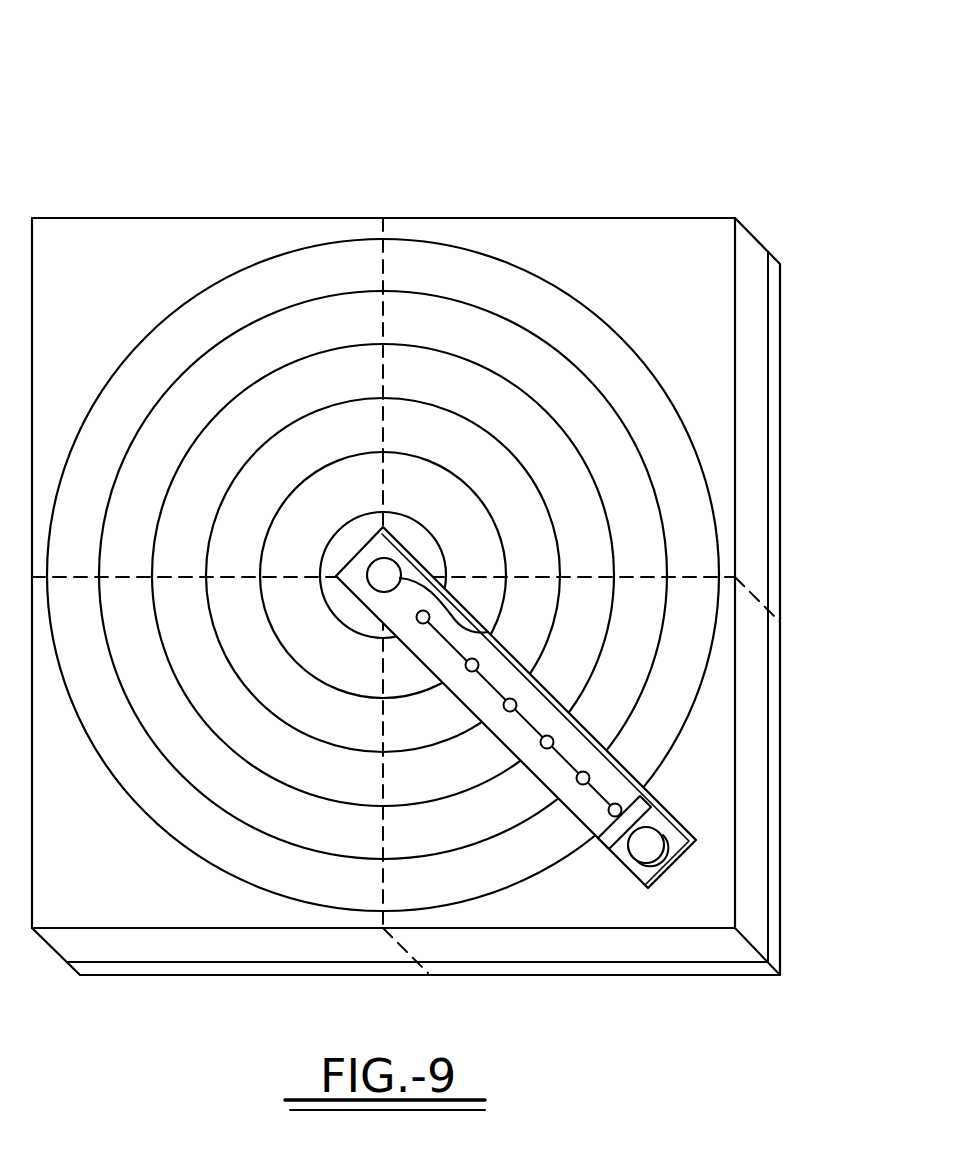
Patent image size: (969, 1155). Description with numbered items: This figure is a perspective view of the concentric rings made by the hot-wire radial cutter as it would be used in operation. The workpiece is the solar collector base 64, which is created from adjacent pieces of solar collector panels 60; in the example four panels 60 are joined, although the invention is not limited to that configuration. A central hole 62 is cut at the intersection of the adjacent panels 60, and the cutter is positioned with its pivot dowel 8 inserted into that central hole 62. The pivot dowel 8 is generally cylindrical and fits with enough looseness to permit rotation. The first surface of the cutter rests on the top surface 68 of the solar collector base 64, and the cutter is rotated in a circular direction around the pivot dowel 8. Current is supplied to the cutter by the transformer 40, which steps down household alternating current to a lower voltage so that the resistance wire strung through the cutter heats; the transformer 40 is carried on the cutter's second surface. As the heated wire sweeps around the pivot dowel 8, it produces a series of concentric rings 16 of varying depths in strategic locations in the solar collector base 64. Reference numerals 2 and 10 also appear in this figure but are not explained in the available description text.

The end circle / sensor 2 is at (652, 841).
The pivot dowel 8 is at (388, 450).
The holes on arm 10 is at (512, 705).
The concentric rings 16 is at (702, 466).
The transformer 40 is at (648, 803).
The solar collector panels 60 is at (681, 248).
The central hole 62 is at (488, 632).
The solar collector base 64 is at (175, 100).
The top surface 68 is at (119, 263).